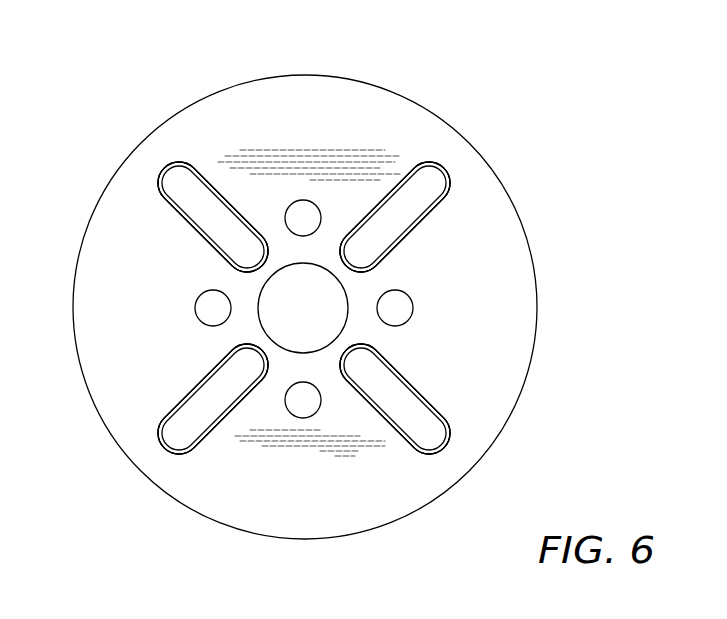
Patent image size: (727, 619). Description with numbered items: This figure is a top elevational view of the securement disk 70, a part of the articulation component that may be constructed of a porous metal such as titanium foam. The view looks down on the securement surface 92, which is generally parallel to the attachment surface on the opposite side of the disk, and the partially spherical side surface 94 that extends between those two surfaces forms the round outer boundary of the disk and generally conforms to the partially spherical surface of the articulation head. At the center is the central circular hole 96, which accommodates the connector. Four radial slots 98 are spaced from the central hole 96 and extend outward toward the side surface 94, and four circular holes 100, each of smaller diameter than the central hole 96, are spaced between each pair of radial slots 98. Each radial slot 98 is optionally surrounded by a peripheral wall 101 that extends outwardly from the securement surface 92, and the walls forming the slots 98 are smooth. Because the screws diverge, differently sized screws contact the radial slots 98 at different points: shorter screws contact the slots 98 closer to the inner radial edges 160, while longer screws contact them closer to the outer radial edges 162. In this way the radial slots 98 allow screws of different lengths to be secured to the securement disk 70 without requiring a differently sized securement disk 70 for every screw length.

The securement disk 70 is at (509, 455).
The securement surface 92 is at (465, 152).
The partially spherical side surface 94 is at (85, 335).
The central circular hole 96 is at (321, 293).
The radial slots 98 is at (175, 190).
The circular holes 100 is at (293, 215).
The peripheral walls 101 is at (204, 172).
The inner radial edges 160 is at (257, 268).
The outer radial edges 162 is at (178, 196).